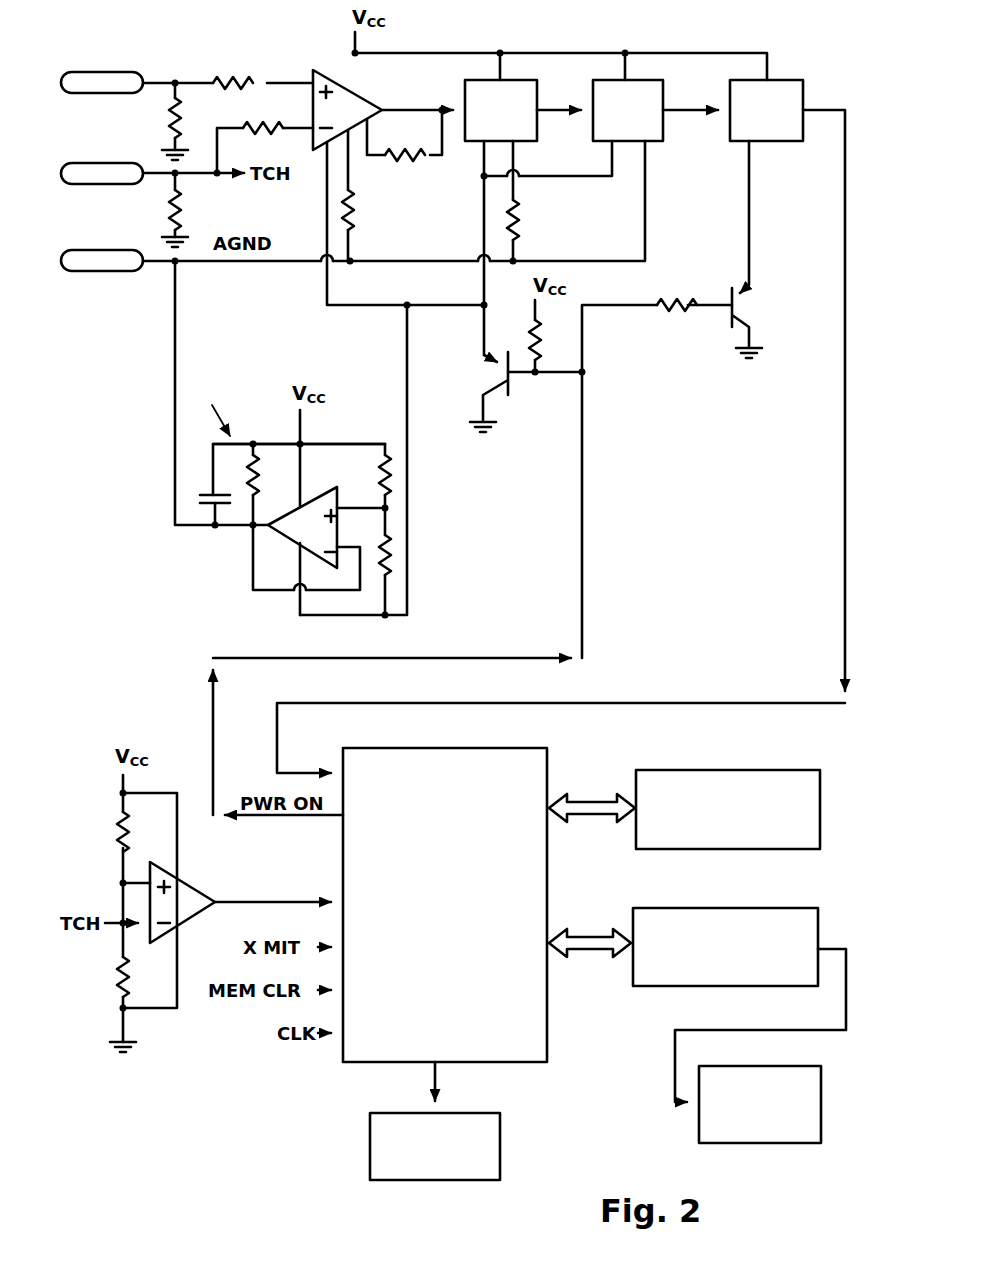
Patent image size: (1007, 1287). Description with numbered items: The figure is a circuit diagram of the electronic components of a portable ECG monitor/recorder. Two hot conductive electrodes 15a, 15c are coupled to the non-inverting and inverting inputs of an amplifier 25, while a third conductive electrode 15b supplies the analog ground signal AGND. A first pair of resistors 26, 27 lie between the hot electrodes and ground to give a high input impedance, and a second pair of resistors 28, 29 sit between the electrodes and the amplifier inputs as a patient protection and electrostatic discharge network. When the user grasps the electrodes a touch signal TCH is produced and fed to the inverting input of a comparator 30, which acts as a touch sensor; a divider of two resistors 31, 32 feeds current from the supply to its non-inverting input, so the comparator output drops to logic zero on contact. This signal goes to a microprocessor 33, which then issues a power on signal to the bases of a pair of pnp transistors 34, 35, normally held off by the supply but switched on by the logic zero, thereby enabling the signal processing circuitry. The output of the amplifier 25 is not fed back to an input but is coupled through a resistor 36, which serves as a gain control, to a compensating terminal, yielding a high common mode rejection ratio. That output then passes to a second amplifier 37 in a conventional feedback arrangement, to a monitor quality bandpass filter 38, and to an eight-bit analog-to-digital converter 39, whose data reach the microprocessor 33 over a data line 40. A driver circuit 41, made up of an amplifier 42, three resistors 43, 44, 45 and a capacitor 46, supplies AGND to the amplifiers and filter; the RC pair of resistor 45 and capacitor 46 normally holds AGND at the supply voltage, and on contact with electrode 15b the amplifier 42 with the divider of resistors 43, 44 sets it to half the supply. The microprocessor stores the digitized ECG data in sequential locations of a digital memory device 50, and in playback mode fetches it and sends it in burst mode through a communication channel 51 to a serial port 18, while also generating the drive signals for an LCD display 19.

The conductive electrode 15a is at (102, 96).
The conductive electrode 15b is at (103, 276).
The conductive electrode 15c is at (103, 188).
The serial port 18 is at (780, 1143).
The LCD display 19 is at (370, 1136).
The amplifier 25 is at (336, 68).
The resistor 26 is at (170, 118).
The resistor 27 is at (168, 196).
The resistor 28 is at (240, 70).
The resistor 29 is at (244, 122).
The comparator 30 is at (200, 912).
The resistor 31 is at (117, 830).
The resistor 32 is at (115, 972).
The microprocessor 33 is at (445, 905).
The pnp type transistor 34 is at (505, 383).
The pnp type transistor 35 is at (726, 312).
The resistor 36 is at (415, 164).
The second amplifier 37 is at (464, 86).
The bandpass filter 38 is at (592, 82).
The analog-to-digital converter 39 is at (728, 82).
The data line 40 is at (845, 508).
The driver circuit 41 is at (292, 412).
The amplifier 42 is at (300, 531).
The resistor 43 is at (380, 482).
The resistor 44 is at (380, 555).
The resistor 45 is at (282, 478).
The capacitor 46 is at (208, 493).
The digital memory device 50 is at (757, 770).
The communication channel 51 is at (760, 908).